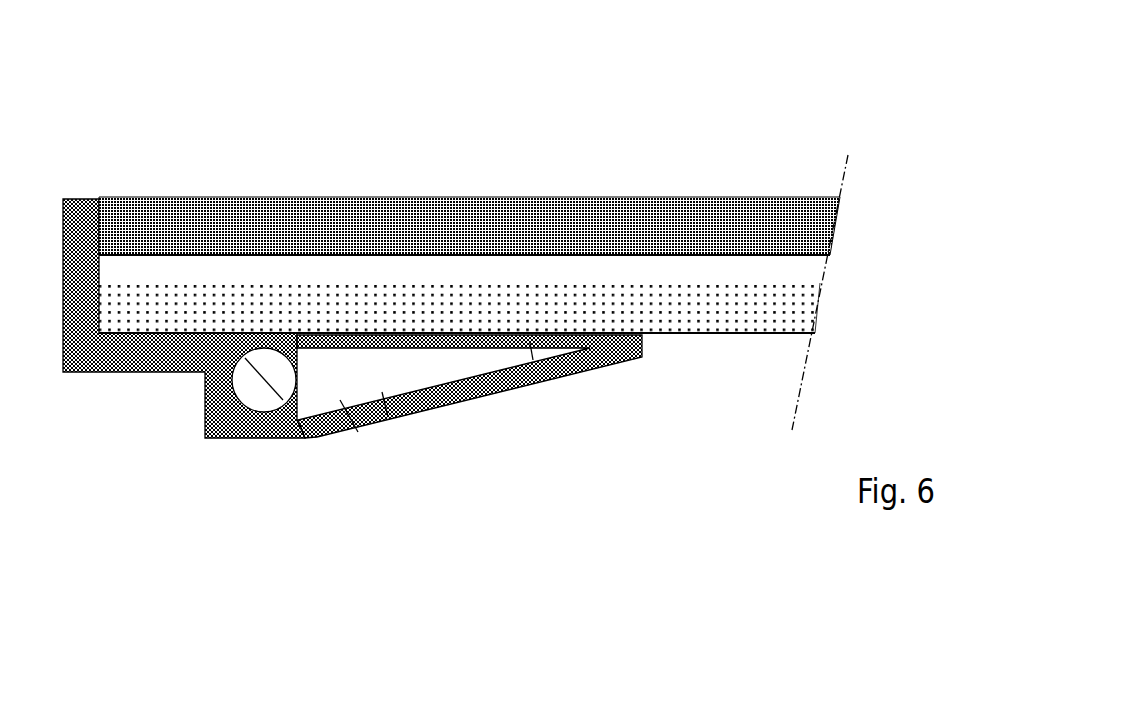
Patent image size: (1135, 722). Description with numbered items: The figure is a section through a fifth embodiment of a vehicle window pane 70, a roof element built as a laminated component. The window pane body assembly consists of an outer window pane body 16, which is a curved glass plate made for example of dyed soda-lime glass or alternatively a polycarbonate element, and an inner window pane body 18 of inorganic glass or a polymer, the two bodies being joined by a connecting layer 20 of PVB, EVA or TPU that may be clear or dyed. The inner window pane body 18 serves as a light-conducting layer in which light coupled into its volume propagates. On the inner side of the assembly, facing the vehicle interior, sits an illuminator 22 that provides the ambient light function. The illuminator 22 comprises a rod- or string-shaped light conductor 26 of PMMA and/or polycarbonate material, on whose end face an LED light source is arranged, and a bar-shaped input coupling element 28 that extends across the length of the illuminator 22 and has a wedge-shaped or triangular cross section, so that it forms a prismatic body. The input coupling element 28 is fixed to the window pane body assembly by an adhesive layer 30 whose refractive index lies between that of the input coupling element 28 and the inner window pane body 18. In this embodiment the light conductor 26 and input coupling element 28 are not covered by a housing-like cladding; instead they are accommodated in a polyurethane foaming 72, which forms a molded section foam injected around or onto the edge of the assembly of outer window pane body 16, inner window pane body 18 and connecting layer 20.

The outer window pane body 16 is at (310, 217).
The inner window pane body 18 is at (722, 302).
The connecting layer 20 is at (805, 262).
The illuminator 22 is at (452, 380).
The light conductor 26 is at (268, 400).
The input coupling element 28 is at (382, 393).
The adhesive layer 30 is at (530, 343).
The vehicle window pane 70 is at (758, 127).
The polyurethane foaming 72 is at (222, 392).